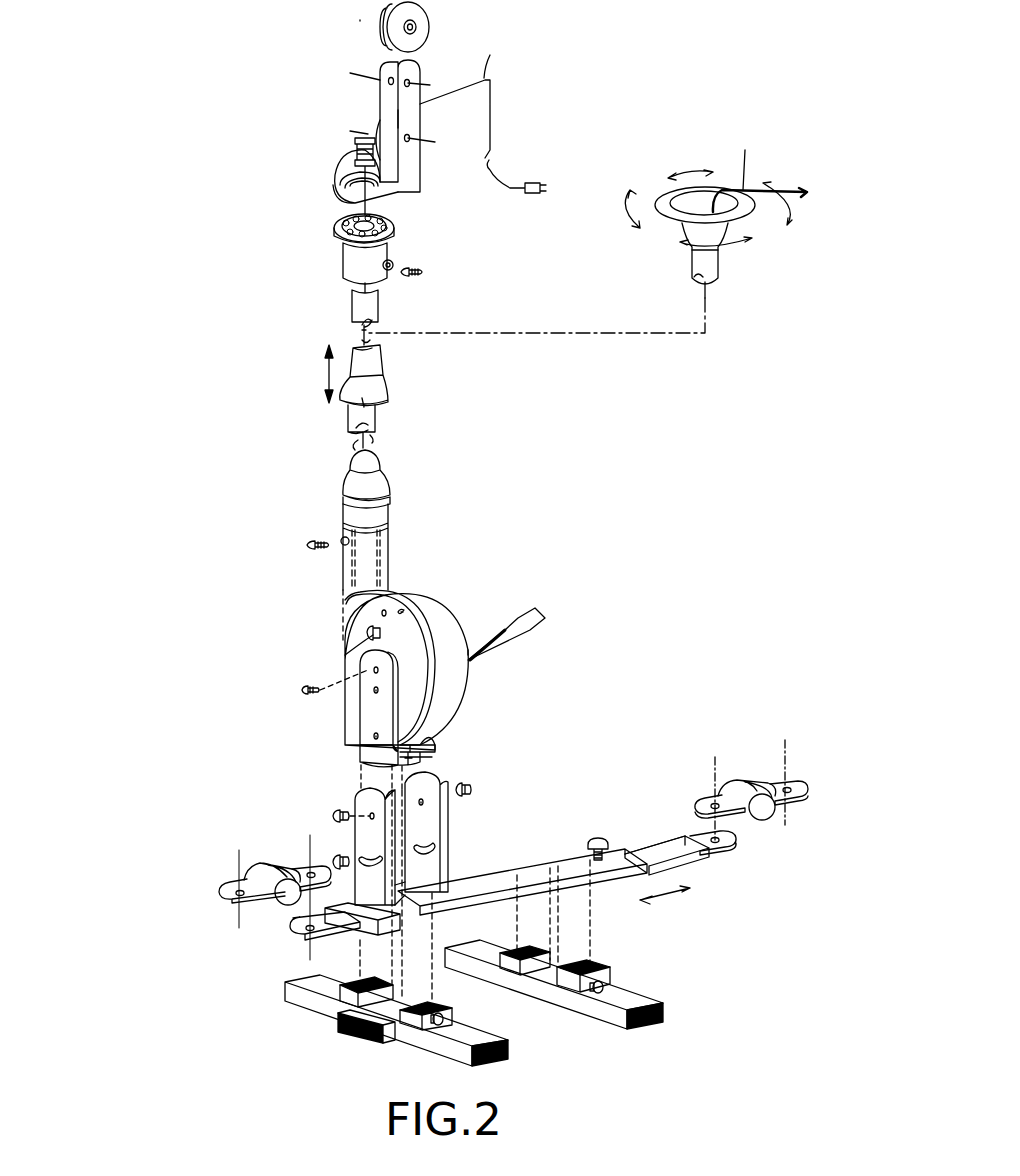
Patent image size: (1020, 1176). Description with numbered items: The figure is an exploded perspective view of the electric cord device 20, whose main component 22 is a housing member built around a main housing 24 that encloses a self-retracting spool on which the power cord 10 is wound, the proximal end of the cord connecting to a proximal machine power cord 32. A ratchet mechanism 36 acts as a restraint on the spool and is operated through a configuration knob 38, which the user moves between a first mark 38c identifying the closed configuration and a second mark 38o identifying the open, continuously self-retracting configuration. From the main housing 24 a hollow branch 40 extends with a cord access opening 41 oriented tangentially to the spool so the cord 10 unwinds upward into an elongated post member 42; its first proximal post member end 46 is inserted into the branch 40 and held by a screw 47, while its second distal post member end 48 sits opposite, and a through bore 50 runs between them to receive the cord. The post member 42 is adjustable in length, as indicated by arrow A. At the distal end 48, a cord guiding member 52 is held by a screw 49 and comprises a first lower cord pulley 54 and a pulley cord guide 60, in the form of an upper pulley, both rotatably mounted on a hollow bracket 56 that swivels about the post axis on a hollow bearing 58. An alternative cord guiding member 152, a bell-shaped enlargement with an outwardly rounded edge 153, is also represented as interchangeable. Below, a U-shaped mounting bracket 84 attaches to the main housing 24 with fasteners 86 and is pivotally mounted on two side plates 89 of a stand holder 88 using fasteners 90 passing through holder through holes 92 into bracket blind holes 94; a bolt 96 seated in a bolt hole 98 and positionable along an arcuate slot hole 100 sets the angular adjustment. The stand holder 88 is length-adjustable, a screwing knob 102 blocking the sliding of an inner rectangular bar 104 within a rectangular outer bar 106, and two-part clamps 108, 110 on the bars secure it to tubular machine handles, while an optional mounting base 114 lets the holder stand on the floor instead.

The power cord 10 is at (586, 184).
The device 20 is at (172, 203).
The main component 22 is at (505, 578).
The main housing 24 is at (485, 680).
The proximal machine power cord 32 is at (490, 640).
The ratchet mechanism 36 is at (362, 640).
The configuration knob 38 is at (368, 632).
The first mark 38c is at (405, 612).
The second mark 38o is at (380, 613).
The hollow branch 40 is at (392, 540).
The cord access opening 41 is at (338, 600).
The elongated post member 42 is at (412, 356).
The first proximal post member end 46 is at (382, 480).
The screw 47 is at (305, 545).
The second distal post member end 48 is at (380, 307).
The screw 49 is at (422, 272).
The through bore 50 is at (360, 343).
The cord guiding member 52 is at (305, 148).
The first lower cord pulley 54 is at (418, 130).
The hollow bracket 56 is at (415, 175).
The hollow bearing 58 is at (322, 240).
The pulley cord guide 60 is at (429, 27).
The mounting bracket 84 is at (360, 750).
The fasteners 86 is at (300, 690).
The stand holder 88 is at (583, 888).
The side plates 89 is at (425, 782).
The fasteners 90 is at (330, 816).
The holder through holes 92 is at (378, 818).
The bracket blind holes 94 is at (372, 690).
The bolt 96 is at (335, 855).
The bolt hole 98 is at (372, 735).
The arcuate slot hole 100 is at (436, 848).
The screwing knob 102 is at (598, 838).
The inner rectangular bar 104 is at (655, 842).
The rectangular outer bar 106 is at (522, 868).
The two-part clamp 108 is at (785, 818).
The two-part clamp 110 is at (230, 888).
The optional mounting base 114 is at (500, 1050).
The cord guiding member 152 is at (714, 242).
The outwardly rounded edge 153 is at (663, 197).
The arrow A is at (325, 370).